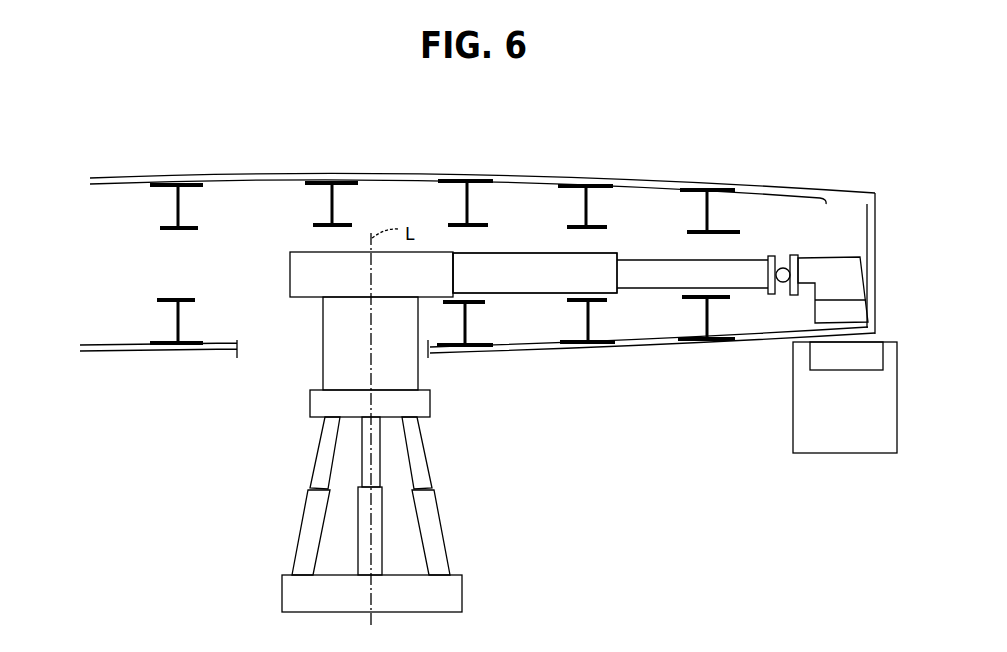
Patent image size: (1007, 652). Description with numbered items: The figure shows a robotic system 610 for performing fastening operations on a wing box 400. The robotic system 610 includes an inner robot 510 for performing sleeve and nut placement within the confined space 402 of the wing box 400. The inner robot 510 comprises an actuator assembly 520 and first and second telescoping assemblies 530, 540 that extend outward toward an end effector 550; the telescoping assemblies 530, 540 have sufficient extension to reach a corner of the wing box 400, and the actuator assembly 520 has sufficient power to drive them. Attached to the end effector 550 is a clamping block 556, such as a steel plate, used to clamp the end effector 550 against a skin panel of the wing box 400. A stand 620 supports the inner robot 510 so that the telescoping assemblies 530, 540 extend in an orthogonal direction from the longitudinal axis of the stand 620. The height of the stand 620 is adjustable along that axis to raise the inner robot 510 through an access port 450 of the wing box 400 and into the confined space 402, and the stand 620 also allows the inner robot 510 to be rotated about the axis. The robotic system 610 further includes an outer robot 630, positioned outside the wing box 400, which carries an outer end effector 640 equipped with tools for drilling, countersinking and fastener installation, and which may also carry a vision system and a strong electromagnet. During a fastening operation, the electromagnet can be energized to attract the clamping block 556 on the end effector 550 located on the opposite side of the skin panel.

The wing box 400 is at (380, 172).
The confined space 402 is at (156, 269).
The access port 450 is at (287, 352).
The inner robot 510 is at (479, 212).
The actuator assembly 520 is at (290, 273).
The first telescoping assembly 530 is at (507, 253).
The second telescoping assembly 540 is at (535, 273).
The end effector 550 is at (827, 257).
The clamping block 556 is at (815, 314).
The robotic system 610 is at (518, 458).
The stand 620 is at (308, 488).
The outer robot 630 is at (792, 407).
The outer end effector 640 is at (808, 367).